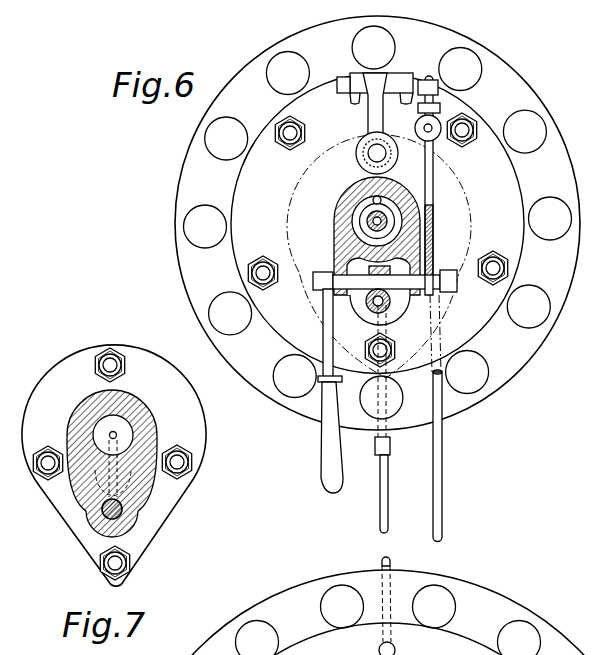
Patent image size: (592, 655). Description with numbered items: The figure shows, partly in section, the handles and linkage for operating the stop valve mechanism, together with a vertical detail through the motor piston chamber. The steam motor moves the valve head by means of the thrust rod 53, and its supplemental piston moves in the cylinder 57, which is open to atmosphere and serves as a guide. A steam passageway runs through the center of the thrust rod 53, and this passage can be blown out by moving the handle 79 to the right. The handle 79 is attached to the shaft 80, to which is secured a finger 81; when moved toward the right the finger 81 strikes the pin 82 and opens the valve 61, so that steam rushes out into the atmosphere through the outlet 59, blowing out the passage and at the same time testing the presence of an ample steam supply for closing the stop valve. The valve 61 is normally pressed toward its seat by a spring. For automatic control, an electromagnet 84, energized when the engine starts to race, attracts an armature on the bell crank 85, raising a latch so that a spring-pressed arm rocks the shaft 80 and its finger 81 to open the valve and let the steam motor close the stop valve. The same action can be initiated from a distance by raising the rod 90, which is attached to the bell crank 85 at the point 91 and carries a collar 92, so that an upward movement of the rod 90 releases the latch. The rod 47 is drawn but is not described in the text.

In FIG. 6, the rod 47 is at (384, 497).
In FIG. 7, the rod 47 is at (385, 632).
In FIG. 7, the thrust rod 53 is at (117, 436).
In FIG. 7, the cylinder 57 is at (113, 421).
In FIG. 7, the outlet passage 59 is at (115, 494).
In FIG. 7, the valve 61 is at (121, 511).
In FIG. 6, the handle 79 is at (330, 477).
In FIG. 6, the shaft 80 is at (418, 282).
In FIG. 6, the finger 81 is at (375, 300).
In FIG. 6, the pin 82 is at (390, 306).
In FIG. 6, the electromagnet 84 is at (379, 153).
In FIG. 6, the bell crank 85 is at (378, 125).
In FIG. 6, the rod 90 is at (440, 502).
In FIG. 6, the attachment point 91 is at (430, 81).
In FIG. 6, the collar 92 is at (438, 107).